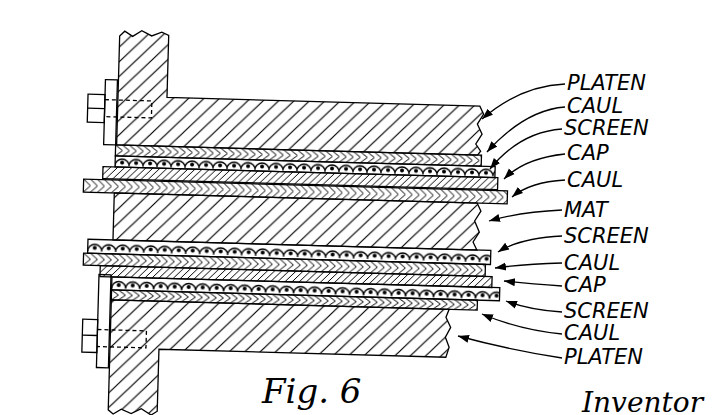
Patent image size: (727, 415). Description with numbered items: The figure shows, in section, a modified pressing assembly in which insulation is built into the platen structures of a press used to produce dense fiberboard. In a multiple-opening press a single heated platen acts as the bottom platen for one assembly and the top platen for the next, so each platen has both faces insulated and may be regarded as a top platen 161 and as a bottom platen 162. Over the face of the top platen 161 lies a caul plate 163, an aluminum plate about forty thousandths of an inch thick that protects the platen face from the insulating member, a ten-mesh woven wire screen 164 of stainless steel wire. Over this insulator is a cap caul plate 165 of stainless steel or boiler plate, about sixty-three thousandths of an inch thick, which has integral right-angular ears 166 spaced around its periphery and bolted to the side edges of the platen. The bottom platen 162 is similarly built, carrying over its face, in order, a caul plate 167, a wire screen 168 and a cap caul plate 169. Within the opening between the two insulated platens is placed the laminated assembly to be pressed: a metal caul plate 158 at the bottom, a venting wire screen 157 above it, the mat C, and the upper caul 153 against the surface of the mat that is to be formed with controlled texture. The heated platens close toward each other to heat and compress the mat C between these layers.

The top platen 161 is at (116, 58).
The right-angular ears 166 is at (88, 97).
The caul plate 163 is at (116, 150).
The woven wire screen 164 is at (114, 162).
The cap caul plate 165 is at (104, 172).
The caul 153 is at (85, 188).
The mat C is at (111, 214).
The venting wire screen 157 is at (91, 246).
The metal caul plate 158 is at (87, 259).
The cap caul plate 169 is at (104, 271).
The wire screen 168 is at (114, 284).
The caul plate 167 is at (114, 297).
The bottom platen 162 is at (115, 386).